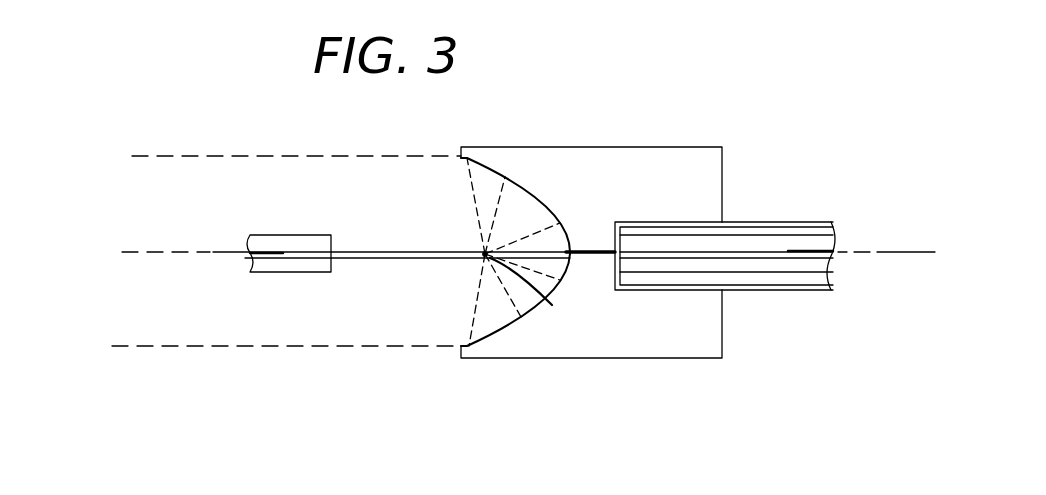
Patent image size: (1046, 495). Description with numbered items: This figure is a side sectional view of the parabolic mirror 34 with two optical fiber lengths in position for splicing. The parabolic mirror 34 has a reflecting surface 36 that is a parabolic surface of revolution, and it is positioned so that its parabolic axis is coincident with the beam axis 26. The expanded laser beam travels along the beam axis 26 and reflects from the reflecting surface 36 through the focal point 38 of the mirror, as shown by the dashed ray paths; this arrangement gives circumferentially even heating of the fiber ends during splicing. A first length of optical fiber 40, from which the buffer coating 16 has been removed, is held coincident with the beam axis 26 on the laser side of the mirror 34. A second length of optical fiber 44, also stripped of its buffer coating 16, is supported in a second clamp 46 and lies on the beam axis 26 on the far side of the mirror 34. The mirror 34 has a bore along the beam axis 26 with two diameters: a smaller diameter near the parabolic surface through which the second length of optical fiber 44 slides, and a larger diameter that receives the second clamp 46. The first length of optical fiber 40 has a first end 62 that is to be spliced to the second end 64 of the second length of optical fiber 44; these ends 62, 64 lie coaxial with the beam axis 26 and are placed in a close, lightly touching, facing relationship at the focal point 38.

The buffer coating 16 is at (285, 263).
The beam axis 26 is at (145, 254).
The parabolic mirror 34 is at (666, 348).
The reflecting surface 36 is at (497, 333).
The focal point 38 is at (485, 253).
The first length of optical fiber 40 is at (355, 255).
The second length of optical fiber 44 is at (543, 252).
The second clamp 46 is at (750, 232).
The first end 62 is at (483, 257).
The second end 64 is at (536, 292).